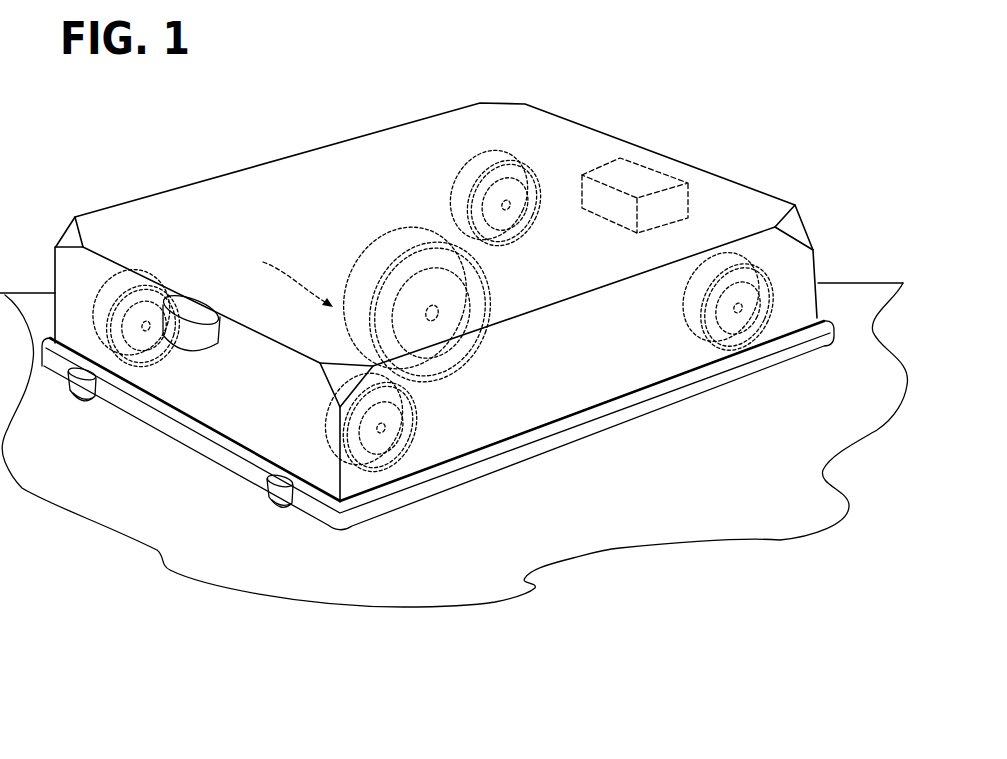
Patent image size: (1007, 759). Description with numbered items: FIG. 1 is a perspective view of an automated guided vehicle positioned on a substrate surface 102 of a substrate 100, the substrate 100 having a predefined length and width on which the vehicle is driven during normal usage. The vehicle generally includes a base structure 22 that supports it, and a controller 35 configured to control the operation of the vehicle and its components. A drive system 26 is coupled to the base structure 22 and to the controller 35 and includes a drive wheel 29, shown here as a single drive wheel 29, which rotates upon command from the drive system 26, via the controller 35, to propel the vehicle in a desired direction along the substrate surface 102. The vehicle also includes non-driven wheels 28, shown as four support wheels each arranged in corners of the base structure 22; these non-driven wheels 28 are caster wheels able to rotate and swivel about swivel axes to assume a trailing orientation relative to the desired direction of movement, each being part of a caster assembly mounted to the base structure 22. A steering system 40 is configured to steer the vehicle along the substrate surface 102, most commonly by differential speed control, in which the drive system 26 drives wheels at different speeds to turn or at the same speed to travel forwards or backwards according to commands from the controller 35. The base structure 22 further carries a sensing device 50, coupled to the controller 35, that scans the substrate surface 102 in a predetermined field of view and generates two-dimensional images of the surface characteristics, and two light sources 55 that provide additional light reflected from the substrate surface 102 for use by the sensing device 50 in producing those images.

The substrate 100 is at (236, 598).
The substrate surface 102 is at (436, 561).
The base structure 22 is at (828, 337).
The drive system 26 is at (369, 303).
The non-driven wheels 28 is at (113, 282).
The drive wheel 29 is at (357, 270).
The controller 35 is at (660, 157).
The steering system 40 is at (281, 277).
The sensing device 50 is at (188, 363).
The light sources 55 is at (70, 387).